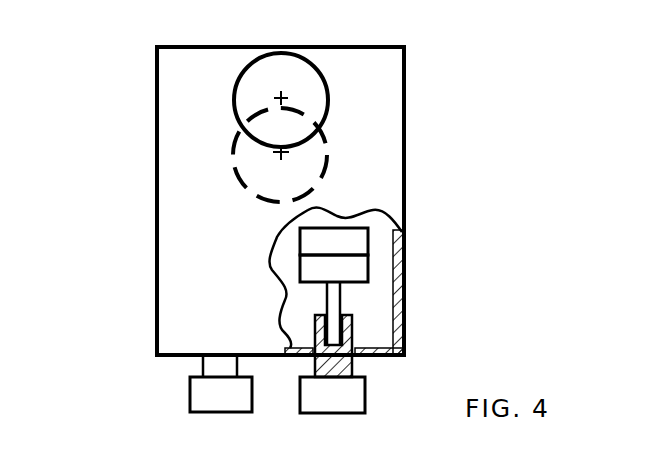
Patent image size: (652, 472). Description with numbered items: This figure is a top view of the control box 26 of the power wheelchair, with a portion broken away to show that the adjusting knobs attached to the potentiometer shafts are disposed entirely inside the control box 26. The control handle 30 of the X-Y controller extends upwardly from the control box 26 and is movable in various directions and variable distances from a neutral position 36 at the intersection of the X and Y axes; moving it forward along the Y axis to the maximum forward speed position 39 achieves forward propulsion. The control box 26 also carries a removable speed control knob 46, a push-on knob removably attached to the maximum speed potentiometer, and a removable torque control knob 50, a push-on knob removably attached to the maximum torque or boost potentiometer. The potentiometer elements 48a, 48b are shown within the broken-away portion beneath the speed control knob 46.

The control box 26 is at (527, 108).
The control handle 30 is at (326, 80).
The neutral position 36 is at (279, 153).
The maximum forward speed position 39 is at (280, 99).
The removable speed control knob 46 is at (337, 413).
The upper slide block 48a is at (370, 256).
The lower slide block 48b is at (370, 292).
The removable torque control knob 50 is at (222, 412).